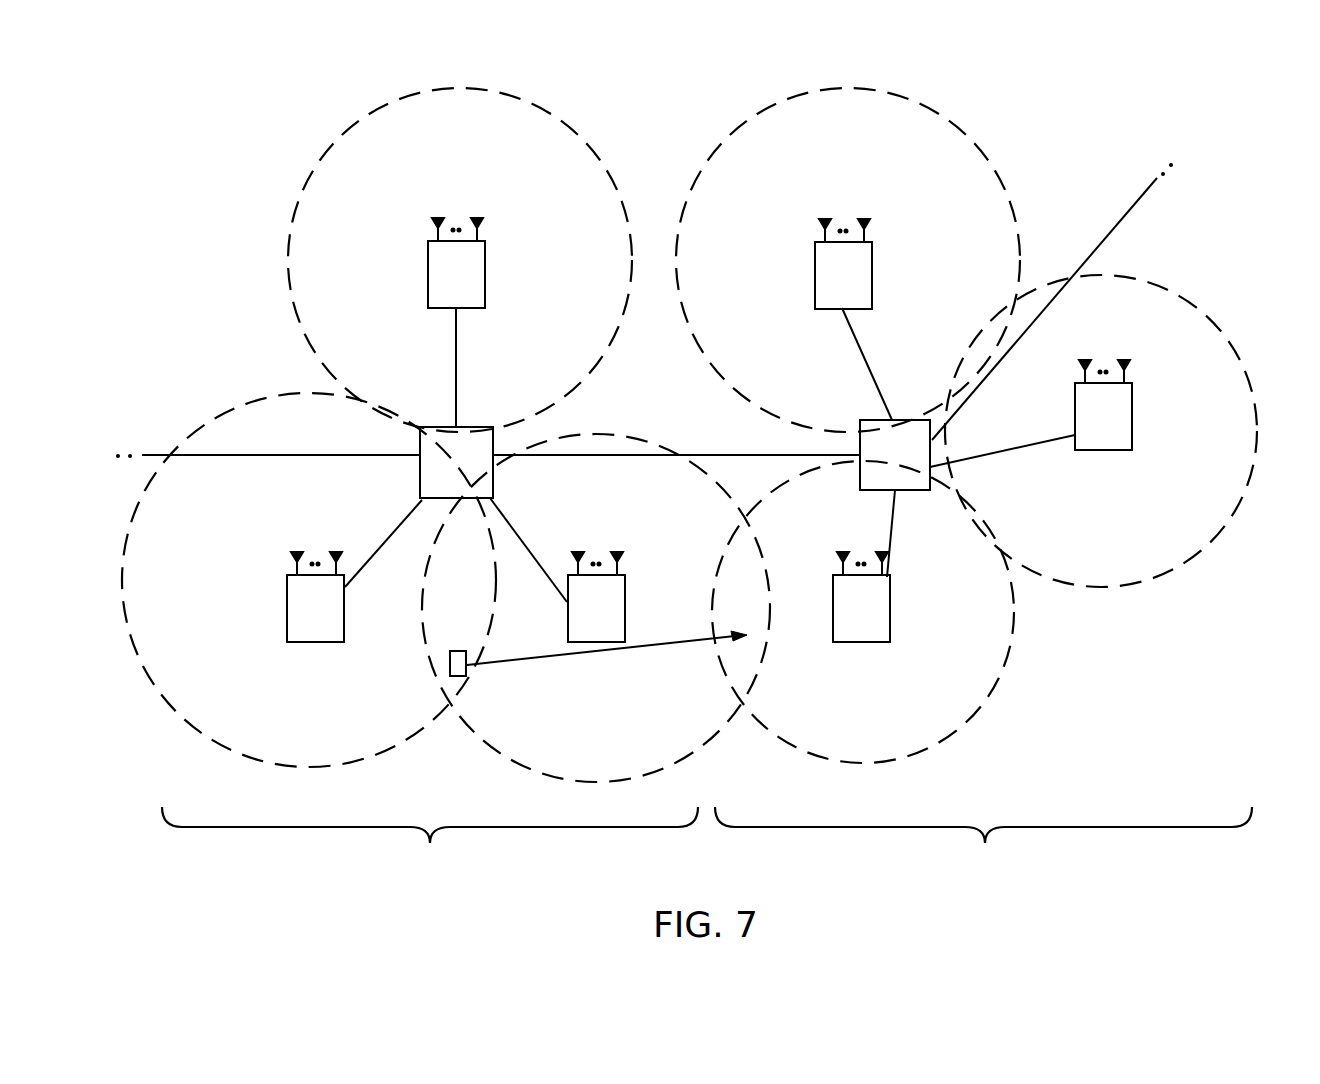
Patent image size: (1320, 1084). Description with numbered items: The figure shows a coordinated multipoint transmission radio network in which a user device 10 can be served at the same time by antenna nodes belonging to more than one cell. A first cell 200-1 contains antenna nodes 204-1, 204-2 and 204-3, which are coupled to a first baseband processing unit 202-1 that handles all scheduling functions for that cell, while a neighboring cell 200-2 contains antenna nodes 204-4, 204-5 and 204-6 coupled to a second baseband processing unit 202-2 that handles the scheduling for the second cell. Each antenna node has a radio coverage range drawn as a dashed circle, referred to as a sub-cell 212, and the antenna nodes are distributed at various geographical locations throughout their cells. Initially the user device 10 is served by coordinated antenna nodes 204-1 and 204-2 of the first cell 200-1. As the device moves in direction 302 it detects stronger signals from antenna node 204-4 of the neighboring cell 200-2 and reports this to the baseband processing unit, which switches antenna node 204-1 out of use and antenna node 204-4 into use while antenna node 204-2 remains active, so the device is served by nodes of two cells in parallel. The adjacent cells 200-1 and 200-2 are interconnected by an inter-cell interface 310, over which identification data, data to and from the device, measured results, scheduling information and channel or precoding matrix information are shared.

The user device 10 is at (460, 652).
The first cell 200-1 is at (430, 841).
The neighboring cell 200-2 is at (983, 841).
The first baseband processing unit 202-1 is at (475, 427).
The second baseband processing unit 202-2 is at (857, 485).
The antenna node 204-1 is at (278, 552).
The antenna node 204-2 is at (630, 548).
The antenna node 204-3 is at (493, 216).
The antenna node 204-4 is at (896, 648).
The antenna node 204-5 is at (1140, 358).
The antenna node 204-6 is at (878, 216).
The sub-cell 212 is at (297, 305).
The direction 302 is at (544, 660).
The inter-cell interface 310 is at (230, 458).